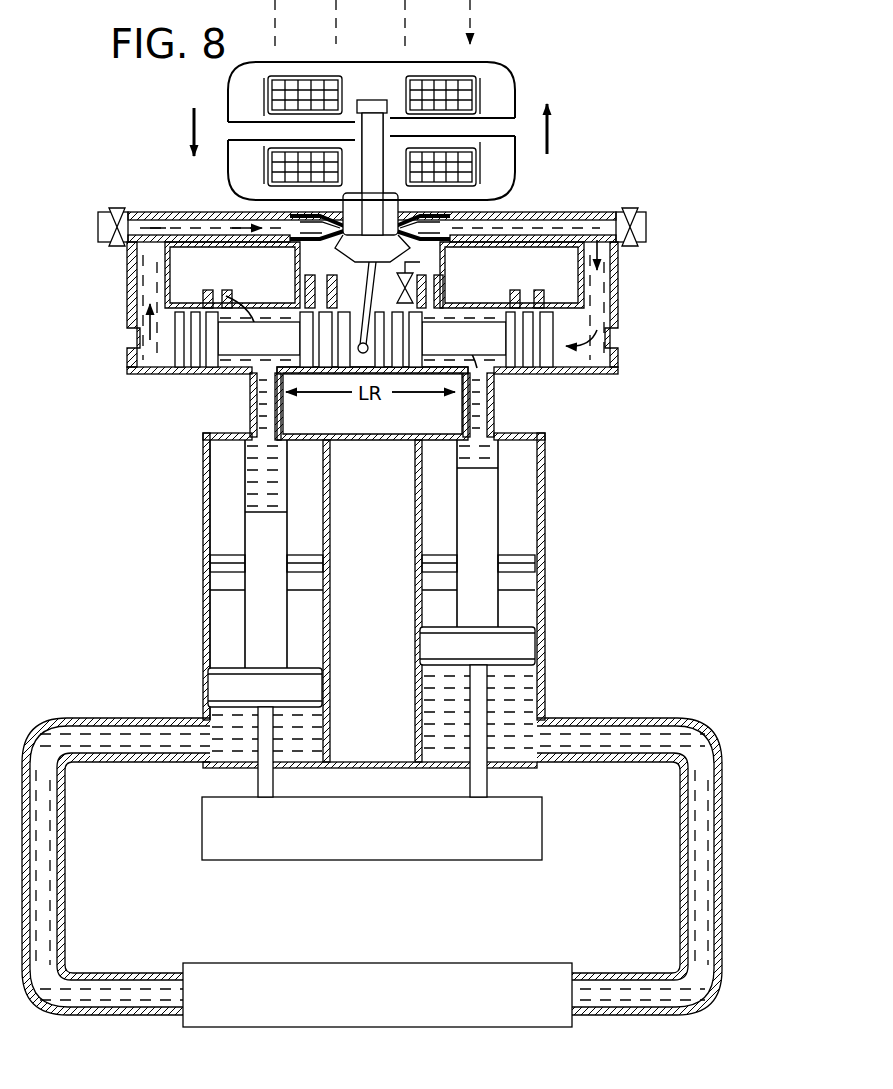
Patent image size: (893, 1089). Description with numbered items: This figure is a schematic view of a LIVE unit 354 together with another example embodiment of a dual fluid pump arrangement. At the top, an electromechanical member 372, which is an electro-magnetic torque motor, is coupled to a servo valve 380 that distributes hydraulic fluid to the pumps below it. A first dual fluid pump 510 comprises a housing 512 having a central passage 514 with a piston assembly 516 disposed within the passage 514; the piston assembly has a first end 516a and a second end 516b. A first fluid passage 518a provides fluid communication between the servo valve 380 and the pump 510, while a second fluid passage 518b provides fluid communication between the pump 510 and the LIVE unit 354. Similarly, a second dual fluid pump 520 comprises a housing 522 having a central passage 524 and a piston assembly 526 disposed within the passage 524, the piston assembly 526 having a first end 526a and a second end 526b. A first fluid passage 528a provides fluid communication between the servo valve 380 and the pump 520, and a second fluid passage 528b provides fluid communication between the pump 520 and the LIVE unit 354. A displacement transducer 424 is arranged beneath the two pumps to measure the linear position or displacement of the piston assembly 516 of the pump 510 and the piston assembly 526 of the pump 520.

The electromechanical member 372 is at (500, 46).
The servo valve 380 is at (697, 244).
The first dual fluid pump 510 is at (546, 501).
The housing 512 is at (546, 456).
The central passage 514 is at (425, 560).
The piston assembly 516 is at (503, 611).
The first end 516a is at (462, 501).
The second end 516b is at (523, 645).
The first fluid passage 518a is at (480, 447).
The second fluid passage 518b is at (527, 706).
The second dual fluid pump 520 is at (208, 470).
The housing 522 is at (210, 505).
The central passage 524 is at (220, 612).
The piston assembly 526 is at (242, 652).
The first end 526a is at (252, 535).
The second end 526b is at (311, 696).
The first fluid passage 528a is at (265, 447).
The second fluid passage 528b is at (228, 739).
The displacement transducer 424 is at (546, 832).
The LIVE unit 354 is at (435, 963).